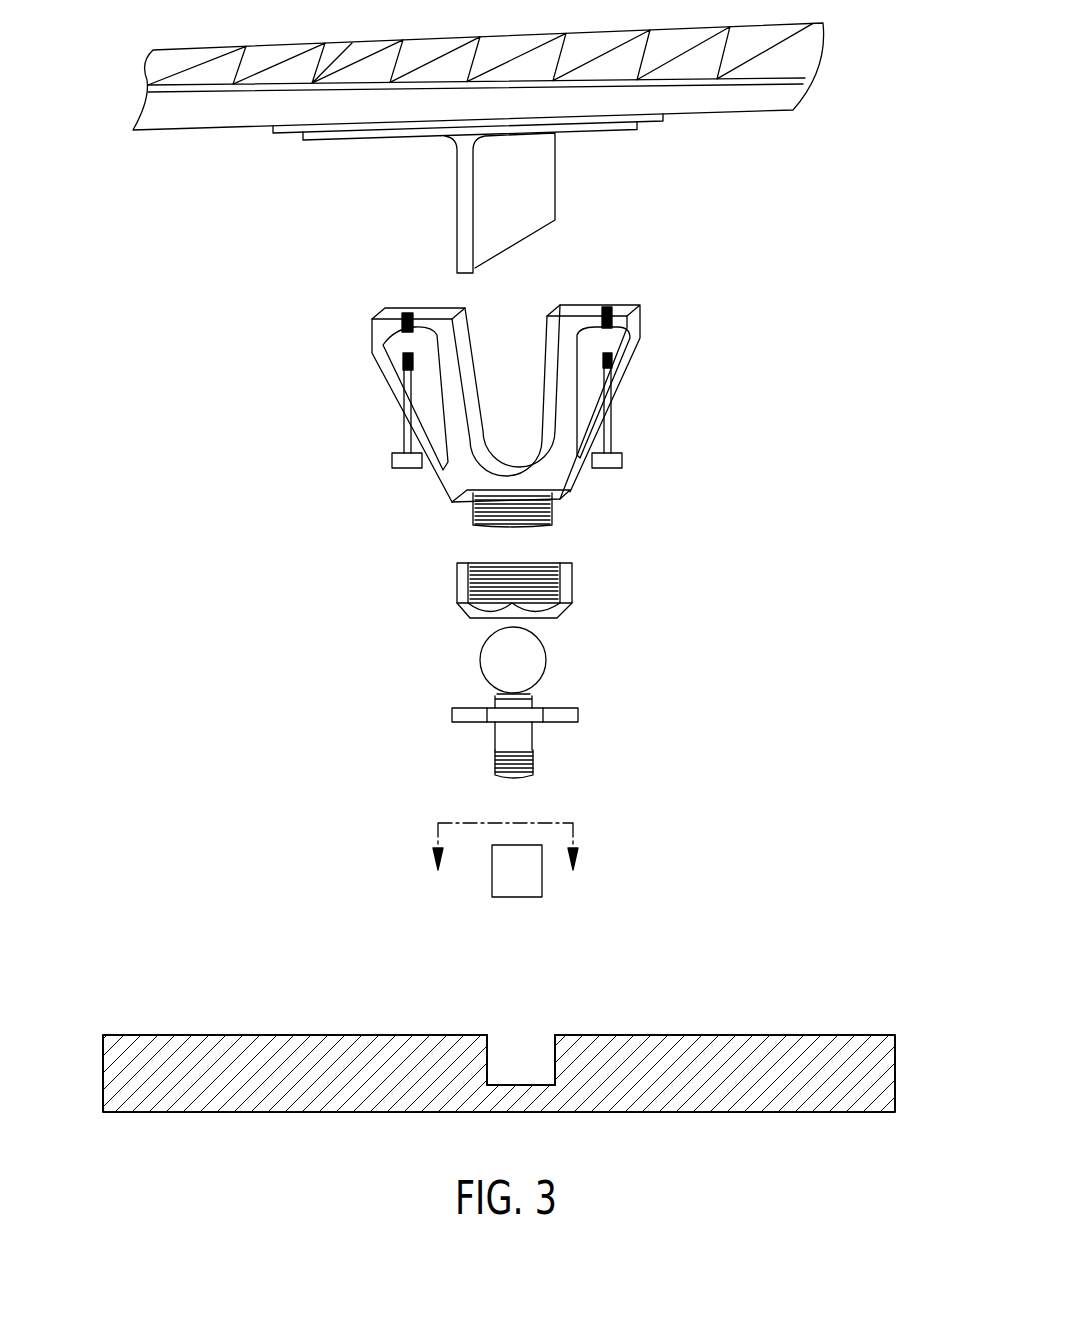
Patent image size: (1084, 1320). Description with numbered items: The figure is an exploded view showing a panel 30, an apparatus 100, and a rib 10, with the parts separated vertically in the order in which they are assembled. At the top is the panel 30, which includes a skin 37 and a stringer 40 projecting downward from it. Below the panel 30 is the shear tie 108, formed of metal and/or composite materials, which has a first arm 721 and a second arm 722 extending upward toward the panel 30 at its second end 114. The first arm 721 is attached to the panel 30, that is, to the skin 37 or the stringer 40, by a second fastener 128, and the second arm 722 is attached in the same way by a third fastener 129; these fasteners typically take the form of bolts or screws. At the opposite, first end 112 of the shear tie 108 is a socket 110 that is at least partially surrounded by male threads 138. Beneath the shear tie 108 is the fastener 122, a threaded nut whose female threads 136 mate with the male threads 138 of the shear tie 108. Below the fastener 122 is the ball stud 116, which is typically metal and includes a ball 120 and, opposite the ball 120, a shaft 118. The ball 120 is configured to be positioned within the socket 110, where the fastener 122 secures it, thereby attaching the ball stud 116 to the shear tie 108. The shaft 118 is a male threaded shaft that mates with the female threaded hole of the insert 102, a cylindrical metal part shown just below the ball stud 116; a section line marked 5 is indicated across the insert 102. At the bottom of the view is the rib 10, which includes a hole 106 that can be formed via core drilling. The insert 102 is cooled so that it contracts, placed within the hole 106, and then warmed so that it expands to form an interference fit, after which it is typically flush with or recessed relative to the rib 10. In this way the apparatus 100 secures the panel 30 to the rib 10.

The rib 10 is at (502, 1024).
The panel 30 is at (478, 148).
The skin 37 is at (185, 112).
The stringer 40 is at (540, 191).
The apparatus 100 is at (483, 569).
The insert 102 is at (492, 892).
The hole 106 is at (509, 1016).
The shear tie 108 is at (507, 391).
The socket 110 is at (523, 567).
The first end 112 is at (507, 424).
The second end 114 is at (507, 368).
The ball stud 116 is at (562, 709).
The shaft 118 is at (497, 755).
The ball 120 is at (495, 657).
The fastener 122 is at (567, 590).
The second fastener 128 is at (403, 437).
The third fastener 129 is at (608, 435).
The female threads 136 is at (462, 554).
The male threads 138 is at (547, 510).
The first arm 721 is at (378, 323).
The second arm 722 is at (633, 315).
The section line 5- 5 is at (505, 870).